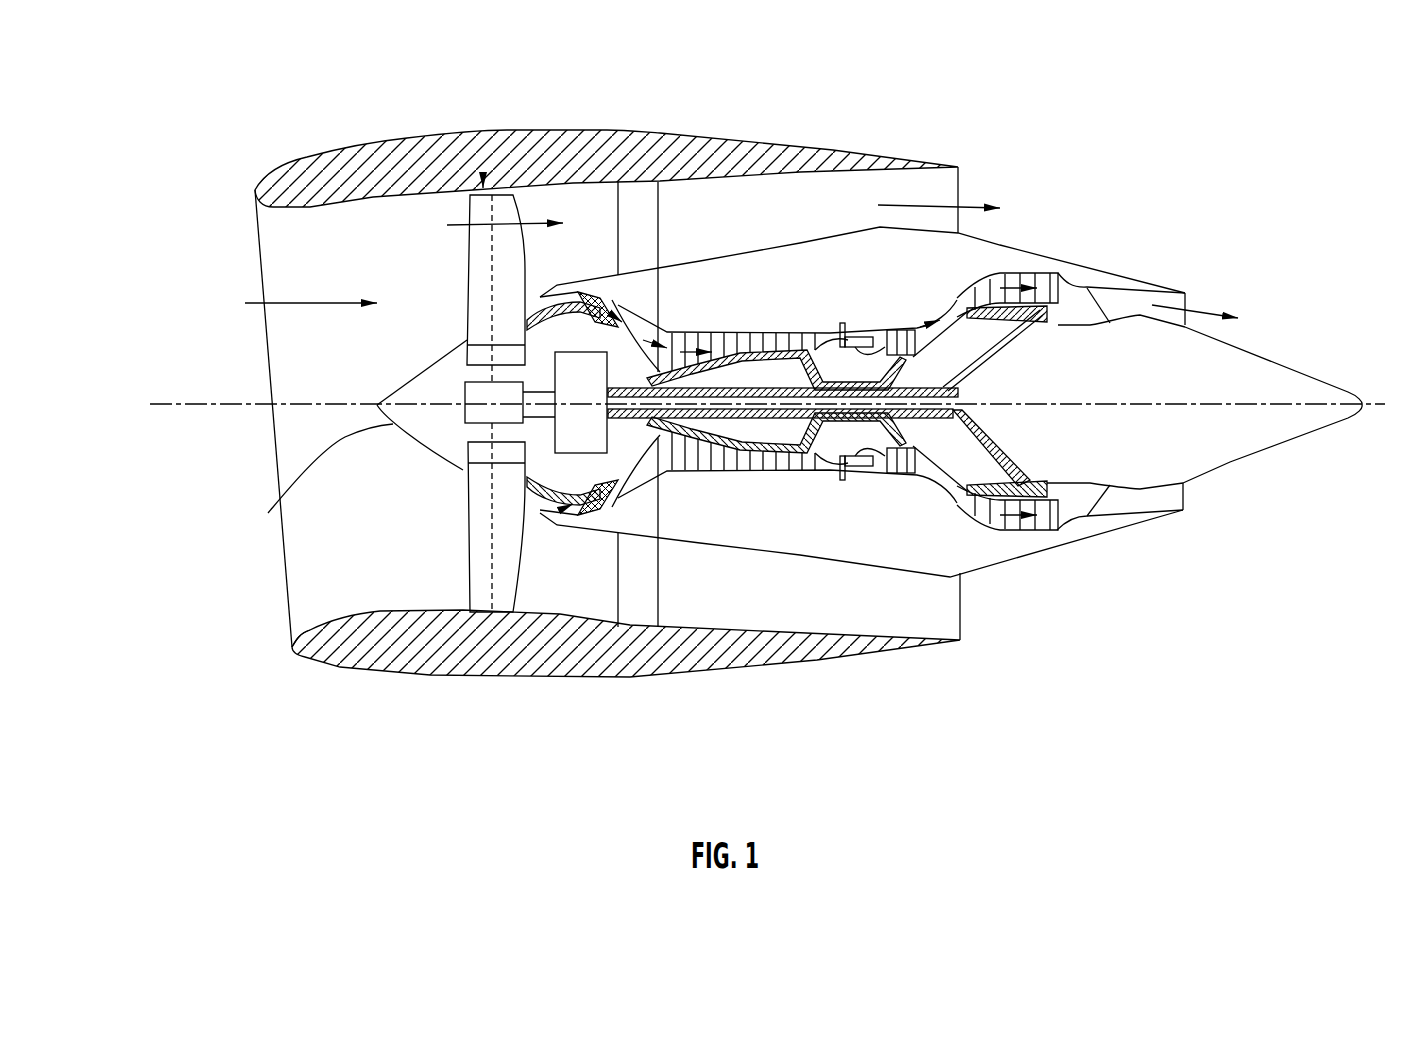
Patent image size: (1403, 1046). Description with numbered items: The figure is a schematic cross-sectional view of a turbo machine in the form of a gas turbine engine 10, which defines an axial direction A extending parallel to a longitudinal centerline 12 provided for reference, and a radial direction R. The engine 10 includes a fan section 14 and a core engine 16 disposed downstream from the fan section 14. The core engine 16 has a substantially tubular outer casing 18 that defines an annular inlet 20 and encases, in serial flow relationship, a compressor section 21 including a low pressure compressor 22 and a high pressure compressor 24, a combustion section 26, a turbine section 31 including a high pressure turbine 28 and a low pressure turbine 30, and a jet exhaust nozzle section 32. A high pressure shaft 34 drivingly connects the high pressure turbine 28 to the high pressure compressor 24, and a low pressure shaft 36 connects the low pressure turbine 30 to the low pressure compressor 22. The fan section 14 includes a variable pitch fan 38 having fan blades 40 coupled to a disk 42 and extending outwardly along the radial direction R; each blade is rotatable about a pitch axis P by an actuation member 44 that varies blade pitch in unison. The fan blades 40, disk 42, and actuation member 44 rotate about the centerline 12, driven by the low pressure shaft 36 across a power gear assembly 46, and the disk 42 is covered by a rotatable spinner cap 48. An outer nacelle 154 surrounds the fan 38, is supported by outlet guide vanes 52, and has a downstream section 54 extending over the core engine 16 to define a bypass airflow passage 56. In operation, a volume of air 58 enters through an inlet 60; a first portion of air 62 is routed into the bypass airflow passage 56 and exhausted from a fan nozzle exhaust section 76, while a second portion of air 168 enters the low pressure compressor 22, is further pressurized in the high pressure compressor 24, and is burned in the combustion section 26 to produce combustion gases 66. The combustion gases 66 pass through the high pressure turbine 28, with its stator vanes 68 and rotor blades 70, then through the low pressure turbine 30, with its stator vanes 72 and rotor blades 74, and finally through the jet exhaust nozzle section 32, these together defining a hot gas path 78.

The gas turbine engine 10 is at (1122, 132).
The longitudinal centerline 12 is at (1125, 404).
The fan section 14 is at (512, 103).
The core engine 16 is at (785, 310).
The outer casing 18 is at (817, 566).
The annular inlet 20 is at (567, 507).
The compressor section 21 is at (673, 327).
The low pressure compressor 22 is at (625, 475).
The high pressure compressor 24 is at (687, 468).
The combustion section 26 is at (858, 462).
The high pressure turbine 28 is at (992, 468).
The low pressure turbine 30 is at (1043, 530).
The turbine section 31 is at (933, 297).
The jet exhaust nozzle section 32 is at (1103, 513).
The high pressure shaft 34 is at (893, 352).
The low pressure shaft 36 is at (985, 357).
The variable pitch fan 38 is at (437, 455).
The fan blades 40 is at (467, 553).
The disk 42 is at (487, 358).
The actuation member 44 is at (463, 385).
The power gear assembly 46 is at (569, 444).
The spinner cap 48 is at (316, 489).
The outlet guide vanes 52 is at (655, 213).
The downstream section of the nacelle 54 is at (885, 157).
The bypass airflow passage 56 is at (757, 229).
The volume of air 58 is at (300, 303).
The inlet 60 is at (292, 622).
The first portion of air 62 is at (480, 222).
The combustion gases 66 is at (903, 327).
The HP turbine stator vanes 68 is at (870, 472).
The HP turbine rotor blades 70 is at (930, 440).
The LP turbine stator vanes 72 is at (963, 513).
The LP turbine rotor blades 74 is at (963, 513).
The fan nozzle exhaust section 76 is at (947, 190).
The hot gas path 78 is at (942, 303).
The outer nacelle 154 is at (513, 675).
The second portion of air 168 is at (550, 292).
The pitch axis P is at (493, 210).
The radial direction R is at (128, 258).
The axial direction A is at (558, 782).